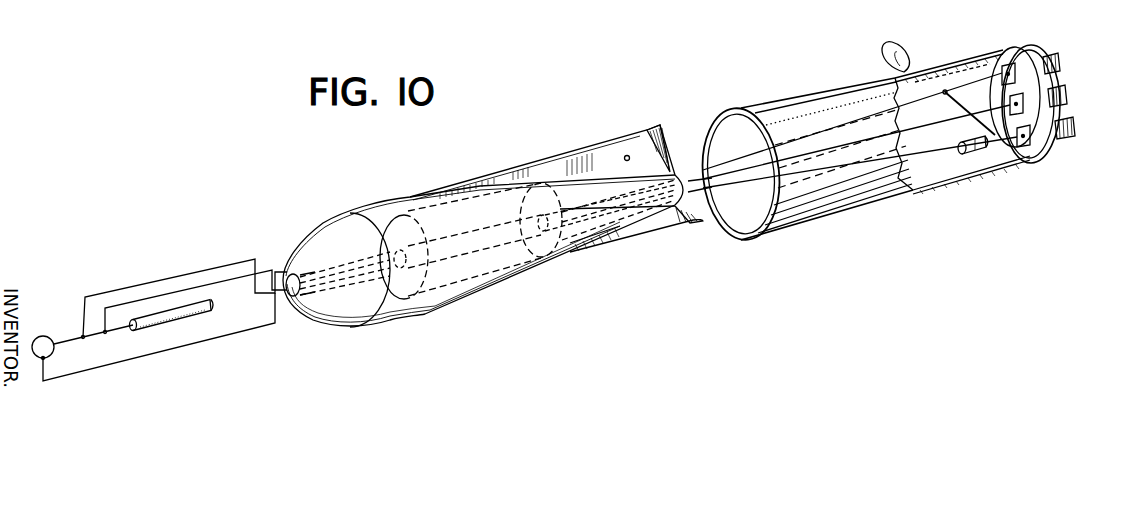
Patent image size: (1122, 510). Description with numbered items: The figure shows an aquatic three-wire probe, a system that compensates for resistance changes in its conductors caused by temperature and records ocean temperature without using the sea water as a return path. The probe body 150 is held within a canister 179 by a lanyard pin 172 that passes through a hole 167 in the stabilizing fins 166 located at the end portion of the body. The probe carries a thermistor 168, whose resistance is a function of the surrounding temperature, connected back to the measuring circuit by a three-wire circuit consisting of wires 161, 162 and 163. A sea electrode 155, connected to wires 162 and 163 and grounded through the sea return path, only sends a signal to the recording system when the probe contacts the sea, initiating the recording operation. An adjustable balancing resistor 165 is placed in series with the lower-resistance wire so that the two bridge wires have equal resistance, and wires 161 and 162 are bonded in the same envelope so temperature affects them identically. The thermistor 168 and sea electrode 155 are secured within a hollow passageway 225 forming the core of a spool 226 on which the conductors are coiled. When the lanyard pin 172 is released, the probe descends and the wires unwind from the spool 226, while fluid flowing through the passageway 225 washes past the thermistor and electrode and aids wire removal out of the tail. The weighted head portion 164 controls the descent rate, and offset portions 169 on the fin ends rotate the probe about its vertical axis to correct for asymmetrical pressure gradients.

The probe body 150 is at (437, 313).
The sea electrode 155 is at (137, 331).
The wire 161 is at (205, 340).
The wire 162 is at (222, 280).
The wire 163 is at (162, 278).
The weighted head portion 164 is at (350, 313).
The adjustable balancing resistor 165 is at (970, 153).
The stabilizing fins 166 is at (570, 152).
The hole 167 is at (630, 155).
The thermistor 168 is at (42, 336).
The offset portions 169 is at (660, 128).
The lanyard pin 172 is at (900, 50).
The canister 179 is at (842, 96).
The hollow passageway 225 is at (484, 266).
The spool 226 is at (430, 207).